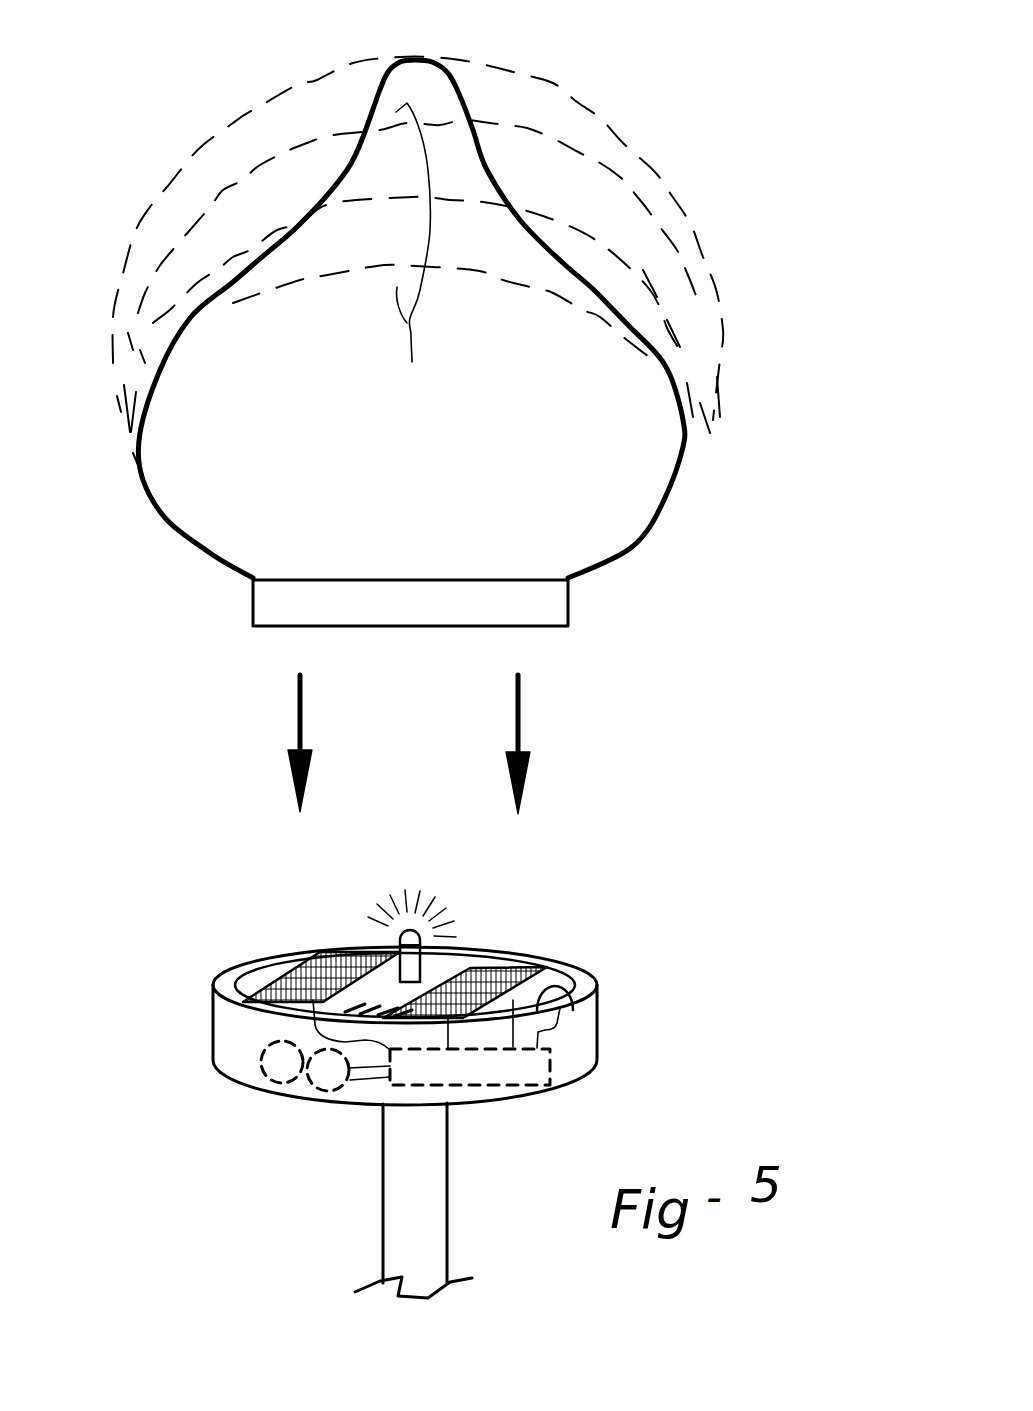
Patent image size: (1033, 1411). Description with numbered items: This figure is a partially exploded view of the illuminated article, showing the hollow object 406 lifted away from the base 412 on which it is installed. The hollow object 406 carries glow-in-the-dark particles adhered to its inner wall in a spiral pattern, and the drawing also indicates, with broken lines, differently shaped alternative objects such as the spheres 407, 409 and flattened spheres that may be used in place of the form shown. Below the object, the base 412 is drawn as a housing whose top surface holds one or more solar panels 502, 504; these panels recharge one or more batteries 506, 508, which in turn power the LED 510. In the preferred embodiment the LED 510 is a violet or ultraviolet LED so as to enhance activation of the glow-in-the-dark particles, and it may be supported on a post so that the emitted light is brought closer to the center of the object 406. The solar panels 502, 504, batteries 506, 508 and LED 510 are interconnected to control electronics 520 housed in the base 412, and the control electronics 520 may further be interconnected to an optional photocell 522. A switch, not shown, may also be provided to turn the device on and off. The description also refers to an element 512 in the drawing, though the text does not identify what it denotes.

The hollow object 406 is at (600, 210).
The sphere 407 is at (600, 118).
The sphere 409 is at (424, 255).
The base 412 is at (210, 1052).
The solar panel 502 is at (302, 977).
The solar panel 504 is at (490, 977).
The battery 506 is at (276, 1078).
The battery 508 is at (310, 1080).
The LED 510 is at (411, 925).
The light sensor 512 is at (400, 947).
The control electronics 520 is at (497, 1073).
The photocell 522 is at (553, 993).